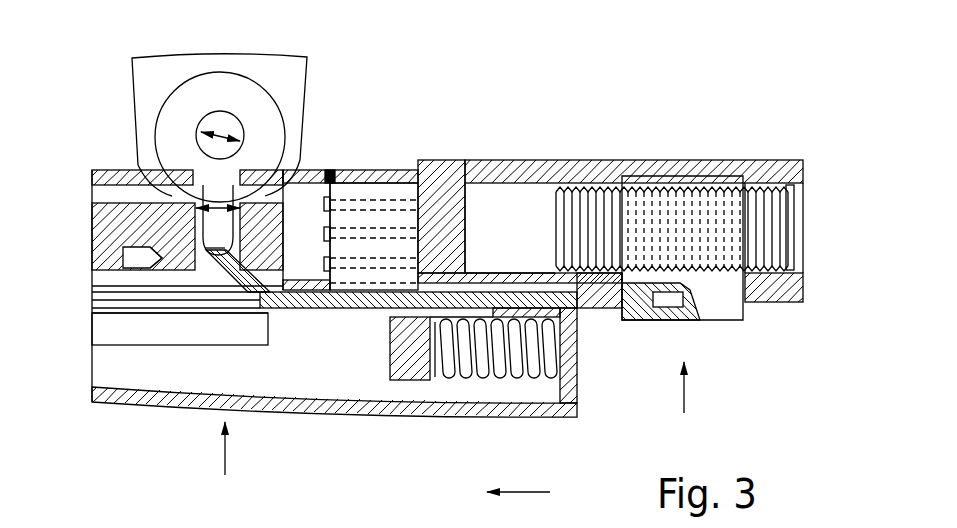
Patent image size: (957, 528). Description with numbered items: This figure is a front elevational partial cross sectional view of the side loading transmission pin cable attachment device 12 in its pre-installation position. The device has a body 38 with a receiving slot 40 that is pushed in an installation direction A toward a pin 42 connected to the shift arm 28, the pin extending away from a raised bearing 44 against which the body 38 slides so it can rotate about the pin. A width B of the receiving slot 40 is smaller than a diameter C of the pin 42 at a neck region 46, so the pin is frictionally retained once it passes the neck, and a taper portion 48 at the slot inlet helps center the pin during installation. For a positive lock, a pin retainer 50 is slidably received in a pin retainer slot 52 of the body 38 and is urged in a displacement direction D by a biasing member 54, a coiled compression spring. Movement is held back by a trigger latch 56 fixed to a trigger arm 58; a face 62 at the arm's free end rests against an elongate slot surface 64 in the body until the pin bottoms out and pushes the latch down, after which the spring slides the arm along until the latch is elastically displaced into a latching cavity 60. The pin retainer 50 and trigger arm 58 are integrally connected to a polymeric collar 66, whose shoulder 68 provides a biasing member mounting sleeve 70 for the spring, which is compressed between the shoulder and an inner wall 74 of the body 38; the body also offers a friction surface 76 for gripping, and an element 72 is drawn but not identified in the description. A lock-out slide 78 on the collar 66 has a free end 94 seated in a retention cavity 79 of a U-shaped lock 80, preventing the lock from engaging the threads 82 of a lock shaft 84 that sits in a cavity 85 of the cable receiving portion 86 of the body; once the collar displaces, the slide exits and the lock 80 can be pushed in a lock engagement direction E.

The side loading transmission pin cable attachment device 12 is at (452, 92).
The shift arm 28 is at (310, 80).
The body 38 is at (135, 380).
The receiving slot 40 is at (160, 228).
The pin 42 is at (218, 117).
The raised bearing 44 is at (284, 128).
The neck region 46 is at (165, 182).
The taper portion 48 is at (290, 165).
The pin retainer 50 is at (407, 200).
The pin retainer slot 52 is at (286, 232).
The biasing member 54 is at (495, 377).
The trigger latch 56 is at (218, 268).
The trigger arm 58 is at (248, 293).
The latching cavity 60 is at (133, 255).
The face 62 is at (212, 253).
The elongate slot surface 64 is at (108, 273).
The collar 66 is at (430, 168).
The shoulder 68 is at (413, 375).
The biasing member mounting sleeve 70 is at (472, 367).
The spring guide 72 is at (520, 383).
The inner wall 74 is at (568, 382).
The friction surface 76 is at (327, 428).
The lock-out slide 78 is at (588, 305).
The retention cavity 79 is at (668, 322).
The U-shaped lock 80 is at (707, 313).
The threads 82 is at (781, 190).
The lock shaft 84 is at (770, 255).
The cavity 85 is at (498, 190).
The cable receiving portion 86 is at (541, 161).
The free end 94 is at (641, 303).
The installation direction A is at (212, 448).
The width B is at (193, 208).
The diameter C is at (198, 131).
The displacement direction D is at (518, 504).
The lock engagement direction E is at (693, 387).